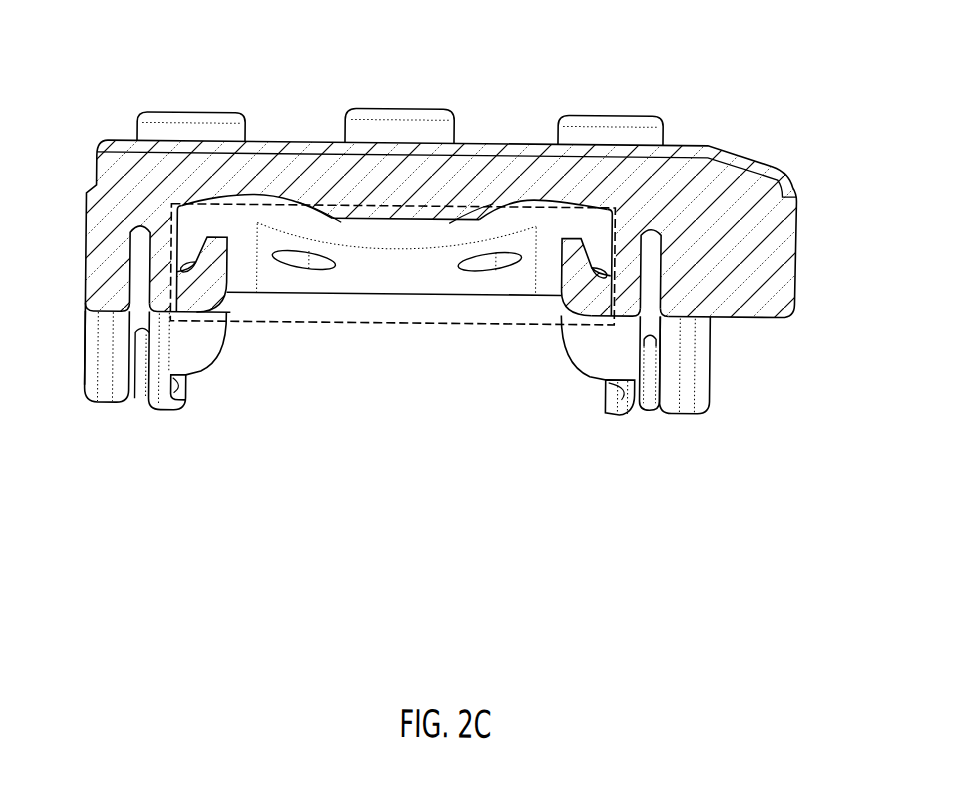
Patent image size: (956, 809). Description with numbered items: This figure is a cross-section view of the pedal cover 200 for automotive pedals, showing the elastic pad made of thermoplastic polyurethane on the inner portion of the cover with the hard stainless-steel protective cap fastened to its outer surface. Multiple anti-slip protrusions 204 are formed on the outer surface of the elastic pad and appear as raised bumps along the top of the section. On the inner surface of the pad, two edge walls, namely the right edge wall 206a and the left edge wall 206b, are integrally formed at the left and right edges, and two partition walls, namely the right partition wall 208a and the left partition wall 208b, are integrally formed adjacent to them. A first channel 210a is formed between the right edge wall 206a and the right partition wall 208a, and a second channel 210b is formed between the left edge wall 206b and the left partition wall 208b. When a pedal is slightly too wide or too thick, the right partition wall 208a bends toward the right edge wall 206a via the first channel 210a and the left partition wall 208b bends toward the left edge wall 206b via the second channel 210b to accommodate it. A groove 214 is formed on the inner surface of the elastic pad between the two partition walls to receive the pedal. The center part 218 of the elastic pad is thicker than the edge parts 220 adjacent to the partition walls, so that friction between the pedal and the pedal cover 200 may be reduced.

The pedal cover 200 is at (755, 105).
The anti-slip protrusions 204 is at (616, 111).
The right edge wall 206a is at (702, 327).
The left edge wall 206b is at (102, 305).
The right partition wall 208a is at (604, 315).
The left partition wall 208b is at (193, 296).
The first channel 210a is at (647, 335).
The second channel 210b is at (145, 332).
The groove 214 is at (388, 323).
The center part 218 is at (398, 214).
The edge parts 220 is at (254, 198).